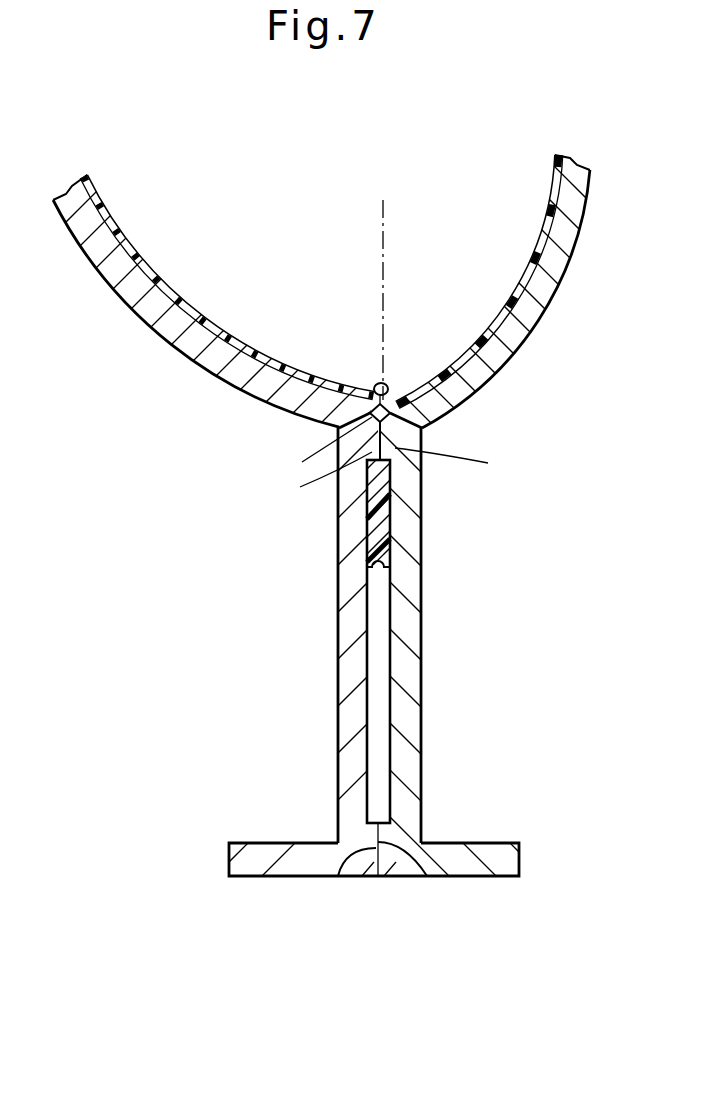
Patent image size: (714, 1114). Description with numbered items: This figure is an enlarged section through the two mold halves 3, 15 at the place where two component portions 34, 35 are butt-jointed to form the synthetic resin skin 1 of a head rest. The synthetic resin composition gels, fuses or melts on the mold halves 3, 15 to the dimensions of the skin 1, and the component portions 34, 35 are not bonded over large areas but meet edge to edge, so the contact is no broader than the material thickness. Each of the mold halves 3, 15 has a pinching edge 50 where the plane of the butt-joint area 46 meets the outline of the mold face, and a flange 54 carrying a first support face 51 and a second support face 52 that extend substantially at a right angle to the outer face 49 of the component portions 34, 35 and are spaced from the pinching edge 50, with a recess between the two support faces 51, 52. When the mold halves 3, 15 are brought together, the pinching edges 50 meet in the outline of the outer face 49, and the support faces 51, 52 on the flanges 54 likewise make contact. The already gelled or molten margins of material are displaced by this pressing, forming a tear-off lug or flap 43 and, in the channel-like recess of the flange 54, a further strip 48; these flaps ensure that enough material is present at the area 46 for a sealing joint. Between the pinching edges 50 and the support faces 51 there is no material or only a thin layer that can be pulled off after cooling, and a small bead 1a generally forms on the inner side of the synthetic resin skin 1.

The synthetic resin skin 1 is at (417, 289).
The small bead 1a is at (374, 388).
The mold half 3 is at (316, 300).
The mold half 15 is at (555, 308).
The component portion 34 is at (137, 257).
The component portion 35 is at (527, 257).
The tear-off lug or flap 43 is at (320, 447).
The area for forming a butt joint 46 is at (384, 293).
The strip 48 is at (378, 532).
The outer face 49 is at (220, 347).
The pinching edge 50 is at (310, 418).
The first support face 51 is at (395, 476).
The second support face 52 is at (340, 876).
The flange 54 is at (347, 724).